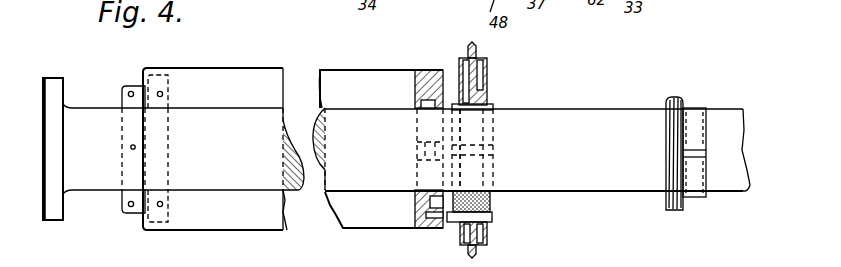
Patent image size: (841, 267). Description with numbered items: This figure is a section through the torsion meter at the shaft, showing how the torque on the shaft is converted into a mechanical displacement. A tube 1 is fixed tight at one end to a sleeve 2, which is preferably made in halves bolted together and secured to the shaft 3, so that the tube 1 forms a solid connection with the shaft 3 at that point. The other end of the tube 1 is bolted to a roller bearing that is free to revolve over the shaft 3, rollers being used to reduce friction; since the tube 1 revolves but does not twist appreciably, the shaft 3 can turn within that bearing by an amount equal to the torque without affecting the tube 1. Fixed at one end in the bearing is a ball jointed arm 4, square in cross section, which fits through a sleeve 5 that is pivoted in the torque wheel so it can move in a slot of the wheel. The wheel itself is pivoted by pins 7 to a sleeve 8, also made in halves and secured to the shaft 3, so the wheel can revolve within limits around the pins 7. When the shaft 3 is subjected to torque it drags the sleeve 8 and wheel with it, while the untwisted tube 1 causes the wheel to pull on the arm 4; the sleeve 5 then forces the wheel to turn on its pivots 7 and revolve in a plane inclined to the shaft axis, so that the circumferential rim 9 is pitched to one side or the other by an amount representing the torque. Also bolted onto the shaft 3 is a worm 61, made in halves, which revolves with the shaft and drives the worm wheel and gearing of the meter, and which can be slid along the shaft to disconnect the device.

The tube 1 is at (208, 68).
The sleeve 2 is at (130, 86).
The shaft 3 is at (57, 76).
The ball jointed arm 4 is at (494, 224).
The sleeve 5 is at (492, 206).
The pins 7 is at (470, 112).
The sleeve 8 is at (490, 105).
The circumferential rim 9 is at (484, 52).
The worm 61 is at (694, 96).